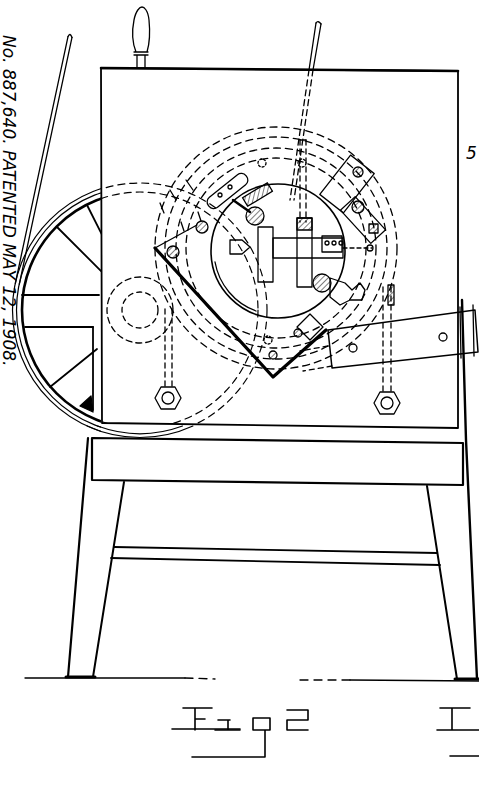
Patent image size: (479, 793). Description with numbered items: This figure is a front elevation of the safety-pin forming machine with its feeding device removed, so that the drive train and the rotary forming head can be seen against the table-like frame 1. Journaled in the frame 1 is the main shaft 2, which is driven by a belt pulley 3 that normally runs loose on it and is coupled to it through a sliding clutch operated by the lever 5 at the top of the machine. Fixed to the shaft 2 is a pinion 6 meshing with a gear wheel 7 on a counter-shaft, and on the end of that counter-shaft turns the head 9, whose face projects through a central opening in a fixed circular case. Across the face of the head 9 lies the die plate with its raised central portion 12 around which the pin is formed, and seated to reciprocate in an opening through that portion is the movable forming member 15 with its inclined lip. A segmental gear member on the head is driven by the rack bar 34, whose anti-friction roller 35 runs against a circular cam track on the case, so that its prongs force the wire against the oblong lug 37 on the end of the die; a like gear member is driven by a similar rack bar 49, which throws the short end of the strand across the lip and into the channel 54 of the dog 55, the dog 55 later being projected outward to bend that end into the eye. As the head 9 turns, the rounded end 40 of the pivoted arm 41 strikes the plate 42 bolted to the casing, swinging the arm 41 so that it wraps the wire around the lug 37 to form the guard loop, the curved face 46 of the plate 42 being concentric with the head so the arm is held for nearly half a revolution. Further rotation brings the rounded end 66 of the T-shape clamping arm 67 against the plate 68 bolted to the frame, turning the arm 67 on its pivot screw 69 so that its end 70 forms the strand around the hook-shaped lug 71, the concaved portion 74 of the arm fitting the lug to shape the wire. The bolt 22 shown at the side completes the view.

The frame 1 is at (252, 490).
The main shaft 2 is at (140, 329).
The belt pulley 3 is at (87, 212).
The lever 5 is at (150, 23).
The pinion 6 is at (135, 283).
The gear wheel 7 is at (258, 131).
The head 9 is at (250, 265).
The raised central portion 12 is at (278, 256).
The movable forming member 15 is at (297, 250).
The bolt 22 is at (395, 293).
The rack bar 34 is at (349, 204).
The anti-friction roller 35 is at (304, 164).
The oblong lug 37 is at (330, 275).
The rounded end 40 is at (341, 330).
The pivoted arm 41 is at (348, 282).
The plate 42 is at (262, 318).
The curved face 46 is at (208, 240).
The rack bar 49 is at (298, 166).
The channel 54 is at (310, 229).
The dog 55 is at (308, 231).
The rounded end 66 is at (252, 166).
The T-shape clamping arm 67 is at (225, 183).
The plate 68 is at (347, 184).
The pivot screw 69 is at (246, 218).
The end 70 is at (173, 193).
The hook-shaped lug 71 is at (231, 249).
The concaved portion 74 is at (208, 206).